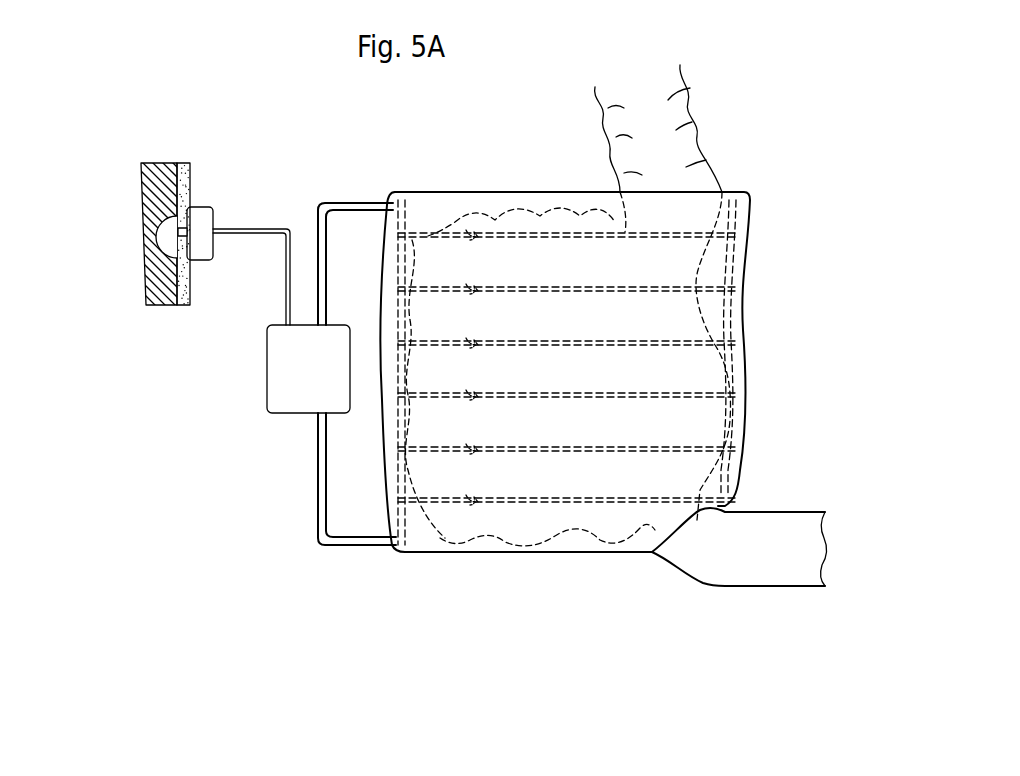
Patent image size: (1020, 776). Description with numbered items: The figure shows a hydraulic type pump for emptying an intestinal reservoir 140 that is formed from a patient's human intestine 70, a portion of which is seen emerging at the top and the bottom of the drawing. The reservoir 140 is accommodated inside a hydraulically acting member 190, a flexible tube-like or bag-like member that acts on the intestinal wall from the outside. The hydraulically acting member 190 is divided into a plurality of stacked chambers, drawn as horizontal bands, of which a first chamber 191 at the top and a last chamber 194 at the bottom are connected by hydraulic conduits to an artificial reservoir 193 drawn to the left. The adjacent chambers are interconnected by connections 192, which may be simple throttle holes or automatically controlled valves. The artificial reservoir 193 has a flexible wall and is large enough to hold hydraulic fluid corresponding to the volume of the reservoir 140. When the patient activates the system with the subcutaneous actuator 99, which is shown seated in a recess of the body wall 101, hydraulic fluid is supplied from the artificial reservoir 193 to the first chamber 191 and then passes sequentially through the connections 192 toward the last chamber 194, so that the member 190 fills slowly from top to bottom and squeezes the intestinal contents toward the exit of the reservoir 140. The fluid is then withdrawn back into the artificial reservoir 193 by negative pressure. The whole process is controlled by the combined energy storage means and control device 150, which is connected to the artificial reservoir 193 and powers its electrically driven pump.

The human intestine 70 is at (694, 110).
The subcutaneous actuator 99 is at (165, 236).
The wall 101 is at (143, 195).
The intestinal reservoir 140 is at (532, 528).
The combined energy storage means and control device 150 is at (204, 214).
The hydraulically acting member 190 is at (418, 563).
The first chamber 191 is at (436, 192).
The connections 192 is at (470, 238).
The artificial reservoir 193 is at (270, 370).
The last chamber 194 is at (608, 540).